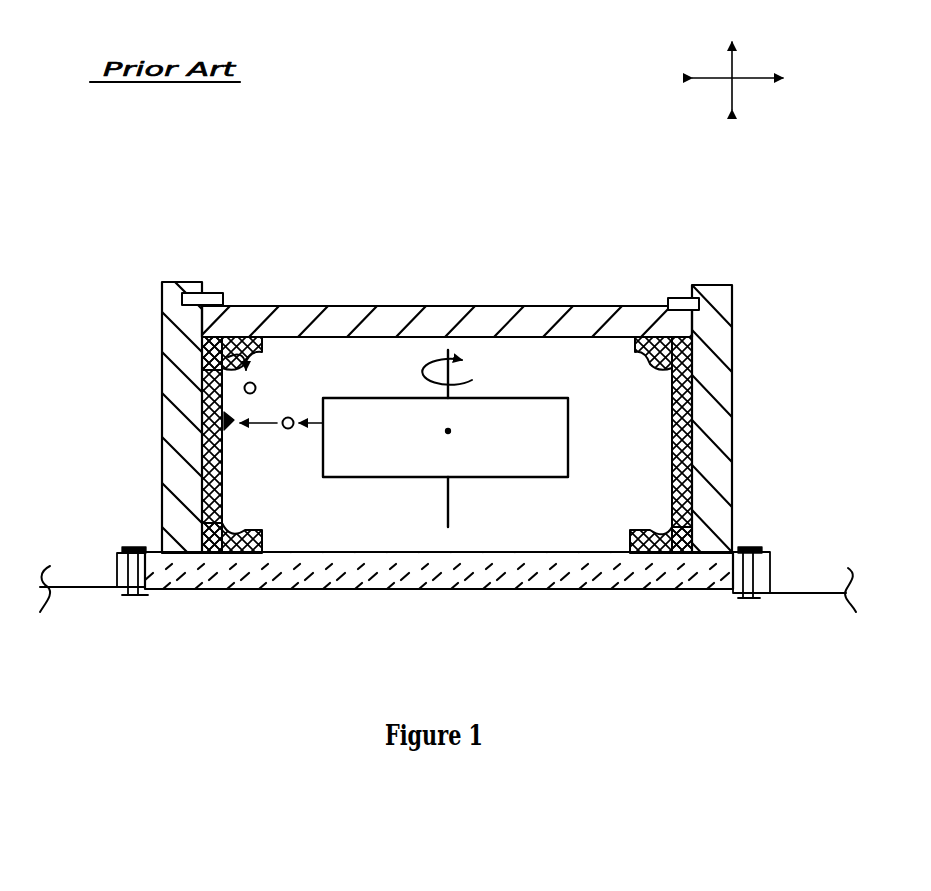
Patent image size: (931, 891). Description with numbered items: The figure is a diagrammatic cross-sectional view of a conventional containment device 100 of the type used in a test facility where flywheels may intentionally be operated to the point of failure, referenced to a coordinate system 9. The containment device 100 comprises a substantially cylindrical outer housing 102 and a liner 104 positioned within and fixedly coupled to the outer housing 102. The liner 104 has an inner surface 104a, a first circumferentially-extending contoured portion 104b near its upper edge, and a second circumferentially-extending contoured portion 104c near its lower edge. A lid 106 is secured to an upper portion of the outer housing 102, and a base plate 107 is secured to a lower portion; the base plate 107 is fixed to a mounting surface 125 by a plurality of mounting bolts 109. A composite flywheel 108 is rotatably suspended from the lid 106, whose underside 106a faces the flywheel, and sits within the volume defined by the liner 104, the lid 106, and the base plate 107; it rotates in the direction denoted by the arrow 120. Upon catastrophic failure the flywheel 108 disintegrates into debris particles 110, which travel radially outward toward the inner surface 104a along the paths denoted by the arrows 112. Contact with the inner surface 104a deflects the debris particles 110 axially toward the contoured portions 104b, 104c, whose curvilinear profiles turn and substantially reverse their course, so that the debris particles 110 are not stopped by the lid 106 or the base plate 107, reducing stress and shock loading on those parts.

The coordinate system 9 is at (755, 53).
The containment device 100 is at (738, 277).
The outer housing 102 is at (158, 417).
The liner 104 is at (667, 473).
The inner surface 104a is at (672, 420).
The first circumferentially-extending contoured portion 104b is at (240, 335).
The second circumferentially-extending contoured portion 104c is at (245, 527).
The lid 106 is at (539, 306).
The underside of top cover 106a is at (364, 340).
The base plate 107 is at (493, 552).
The composite flywheel 108 is at (513, 391).
The mounting bolts 109 is at (130, 546).
The debris particle 110 is at (258, 388).
The arrows 112 is at (262, 367).
The arrow 120 is at (470, 360).
The mounting surface 125 is at (73, 587).